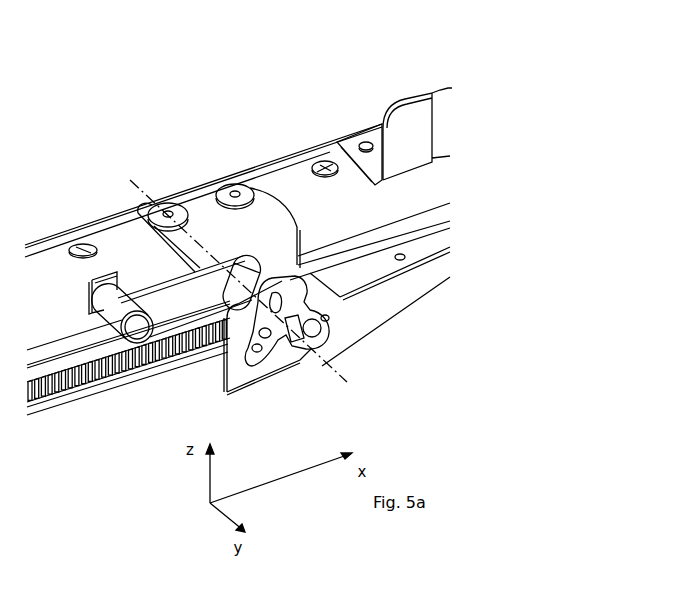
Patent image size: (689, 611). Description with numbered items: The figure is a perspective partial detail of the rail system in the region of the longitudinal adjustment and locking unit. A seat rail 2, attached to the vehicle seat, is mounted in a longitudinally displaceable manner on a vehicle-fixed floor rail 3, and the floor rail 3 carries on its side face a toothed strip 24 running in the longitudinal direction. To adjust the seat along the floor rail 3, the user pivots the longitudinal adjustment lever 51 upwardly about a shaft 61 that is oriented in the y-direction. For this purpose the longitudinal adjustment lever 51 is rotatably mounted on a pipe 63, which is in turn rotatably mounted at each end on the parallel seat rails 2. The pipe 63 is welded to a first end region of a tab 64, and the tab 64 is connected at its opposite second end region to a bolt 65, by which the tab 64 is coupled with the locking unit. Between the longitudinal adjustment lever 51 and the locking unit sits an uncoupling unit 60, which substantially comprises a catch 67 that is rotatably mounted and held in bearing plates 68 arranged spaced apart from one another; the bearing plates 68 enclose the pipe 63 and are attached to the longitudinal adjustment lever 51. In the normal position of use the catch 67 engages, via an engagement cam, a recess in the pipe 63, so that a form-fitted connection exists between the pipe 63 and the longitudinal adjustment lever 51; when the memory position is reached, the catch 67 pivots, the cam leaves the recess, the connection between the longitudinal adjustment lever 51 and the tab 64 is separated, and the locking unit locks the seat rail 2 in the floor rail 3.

The seat rail 2 is at (312, 188).
The floor rail 3 is at (45, 363).
The toothed strip 24 is at (113, 377).
The longitudinal adjustment lever 51 is at (382, 268).
The uncoupling unit 60 is at (278, 361).
The shaft 61 is at (148, 197).
The pipe 63 is at (244, 280).
The tab 64 is at (203, 340).
The bolt 65 is at (109, 296).
The catch 67 is at (297, 297).
The bearing plates 68 is at (245, 355).